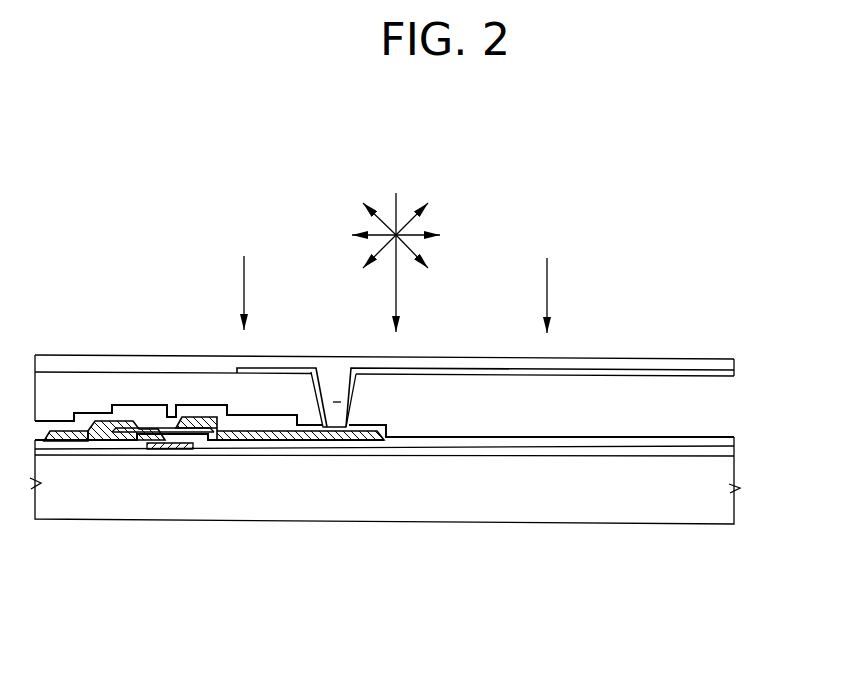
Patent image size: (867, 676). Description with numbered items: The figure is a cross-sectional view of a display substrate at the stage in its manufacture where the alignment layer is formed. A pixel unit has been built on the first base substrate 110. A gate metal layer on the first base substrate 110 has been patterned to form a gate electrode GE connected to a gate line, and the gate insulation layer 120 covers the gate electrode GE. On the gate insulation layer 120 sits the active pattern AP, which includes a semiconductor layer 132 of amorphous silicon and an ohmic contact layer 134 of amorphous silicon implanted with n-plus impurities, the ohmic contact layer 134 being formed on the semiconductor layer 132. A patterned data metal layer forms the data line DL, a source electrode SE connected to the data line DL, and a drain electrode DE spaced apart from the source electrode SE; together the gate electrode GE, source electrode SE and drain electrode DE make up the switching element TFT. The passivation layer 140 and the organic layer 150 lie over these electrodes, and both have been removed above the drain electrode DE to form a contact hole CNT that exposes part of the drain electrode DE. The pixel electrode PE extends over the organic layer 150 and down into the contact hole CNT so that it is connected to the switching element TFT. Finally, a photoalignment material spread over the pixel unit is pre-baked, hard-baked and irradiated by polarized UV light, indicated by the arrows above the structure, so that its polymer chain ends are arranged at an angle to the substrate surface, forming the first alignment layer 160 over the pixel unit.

The first base substrate 110 is at (735, 480).
The gate insulation layer 120 is at (735, 457).
The passivation layer 140 is at (735, 438).
The organic layer 150 is at (735, 402).
The first alignment layer 160 is at (735, 362).
The pixel electrode PE is at (735, 372).
The contact hole CNT is at (337, 402).
The data line DL is at (67, 441).
The switching element TFT is at (236, 537).
The gate electrode GE is at (169, 449).
The source electrode SE is at (114, 429).
The drain electrode DE is at (221, 437).
The active pattern AP is at (220, 522).
The semiconductor layer 132 is at (232, 441).
The ohmic contact layer 134 is at (258, 441).